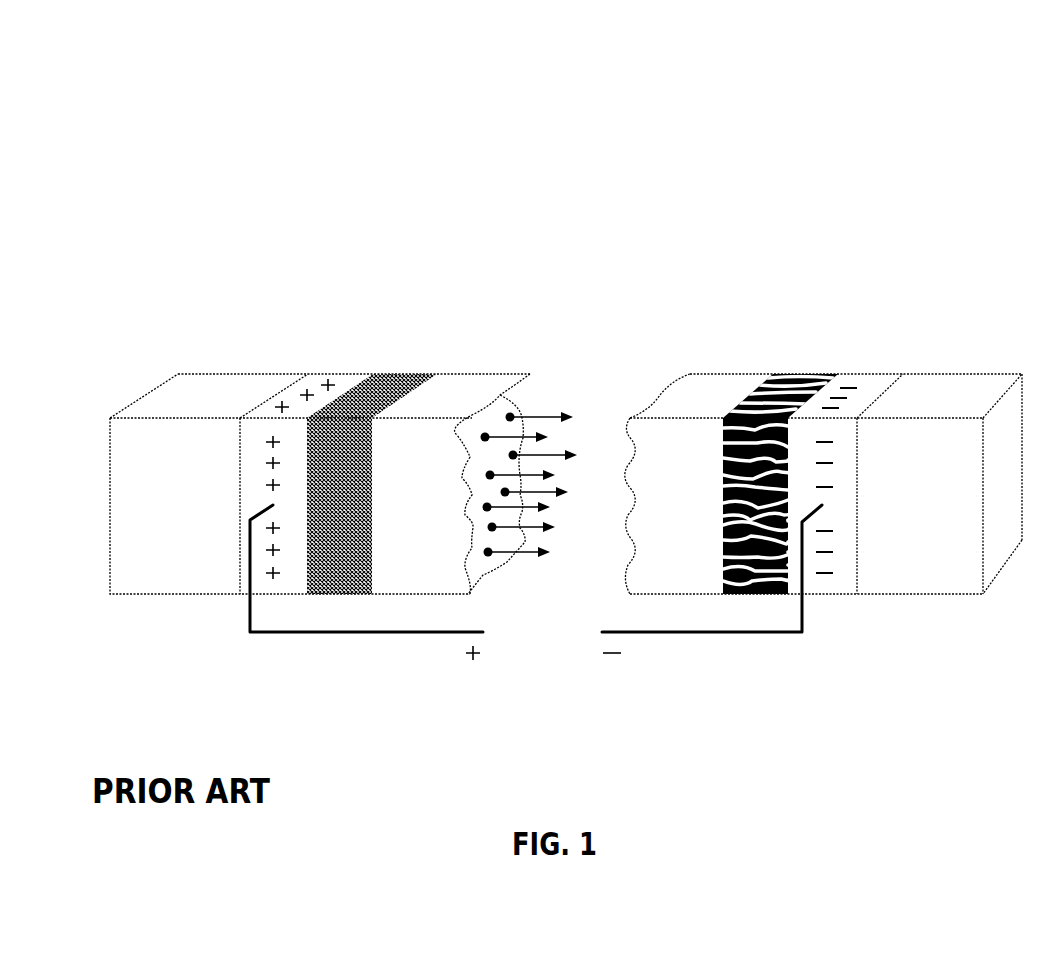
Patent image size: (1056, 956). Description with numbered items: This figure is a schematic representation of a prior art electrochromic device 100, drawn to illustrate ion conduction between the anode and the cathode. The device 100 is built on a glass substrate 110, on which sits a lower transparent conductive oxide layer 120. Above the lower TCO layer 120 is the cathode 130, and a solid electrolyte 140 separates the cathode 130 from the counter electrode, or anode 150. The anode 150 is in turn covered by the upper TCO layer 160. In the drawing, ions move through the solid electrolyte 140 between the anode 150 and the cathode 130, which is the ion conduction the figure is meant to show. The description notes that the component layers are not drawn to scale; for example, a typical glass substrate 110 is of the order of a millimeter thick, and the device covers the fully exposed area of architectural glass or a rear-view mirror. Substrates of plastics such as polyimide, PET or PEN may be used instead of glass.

The electrochromic device 100 is at (163, 119).
The glass substrate 110 is at (919, 568).
The lower transparent conductive oxide (TCO) layer 120 is at (877, 392).
The cathode 130 is at (800, 392).
The solid electrolyte 140 is at (508, 400).
The counter electrode (anode) 150 is at (397, 388).
The upper TCO layer 160 is at (345, 388).